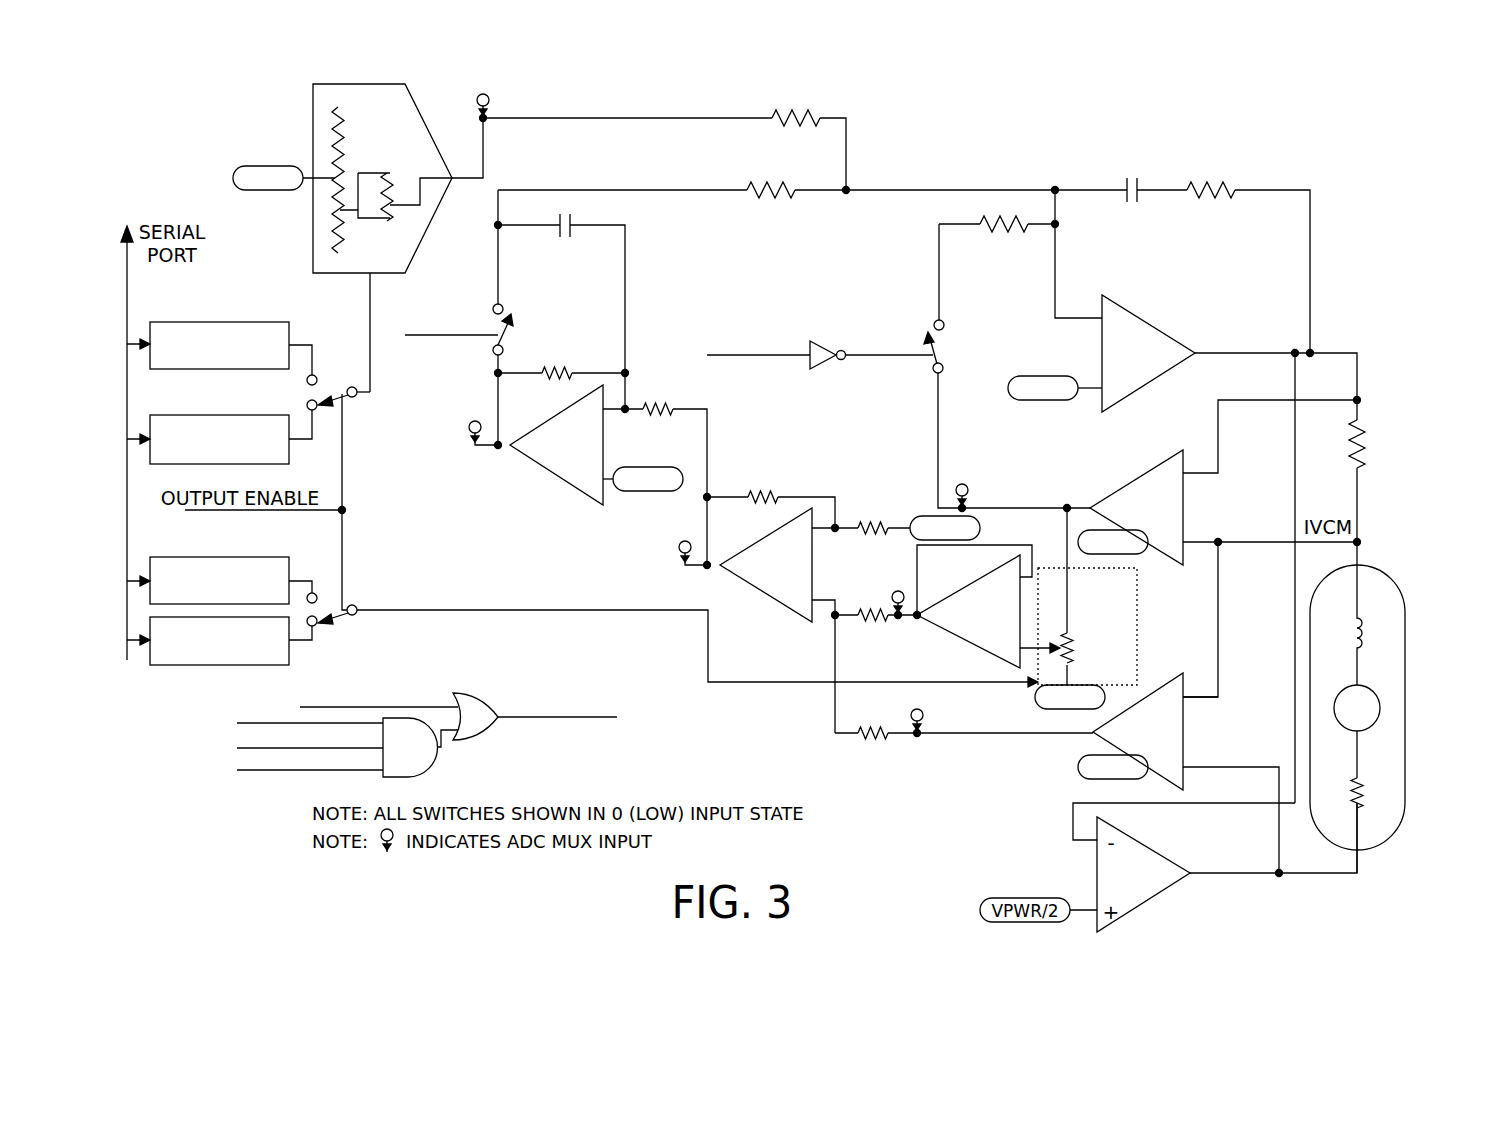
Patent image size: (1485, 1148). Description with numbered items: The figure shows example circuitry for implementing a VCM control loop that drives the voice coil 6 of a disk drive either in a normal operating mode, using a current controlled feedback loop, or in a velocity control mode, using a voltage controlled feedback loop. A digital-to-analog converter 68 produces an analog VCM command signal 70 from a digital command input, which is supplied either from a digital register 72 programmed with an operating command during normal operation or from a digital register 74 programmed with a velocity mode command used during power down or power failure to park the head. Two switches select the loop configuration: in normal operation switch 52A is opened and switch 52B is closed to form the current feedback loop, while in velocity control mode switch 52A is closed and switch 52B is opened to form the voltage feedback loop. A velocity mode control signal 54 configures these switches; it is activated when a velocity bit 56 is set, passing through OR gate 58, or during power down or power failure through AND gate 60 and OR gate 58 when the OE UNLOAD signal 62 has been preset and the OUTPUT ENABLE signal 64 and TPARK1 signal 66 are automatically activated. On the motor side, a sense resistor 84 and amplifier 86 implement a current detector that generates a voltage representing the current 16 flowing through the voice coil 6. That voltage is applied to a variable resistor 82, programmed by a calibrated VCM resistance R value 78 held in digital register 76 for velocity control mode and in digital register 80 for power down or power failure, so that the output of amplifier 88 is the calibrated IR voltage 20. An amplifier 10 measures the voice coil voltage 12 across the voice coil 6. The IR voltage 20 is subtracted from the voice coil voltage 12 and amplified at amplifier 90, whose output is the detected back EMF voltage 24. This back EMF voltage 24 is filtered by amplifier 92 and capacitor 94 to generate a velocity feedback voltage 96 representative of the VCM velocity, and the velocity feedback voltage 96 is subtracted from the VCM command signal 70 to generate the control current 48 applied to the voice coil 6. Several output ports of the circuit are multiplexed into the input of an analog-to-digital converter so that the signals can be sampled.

The voice coil 6 is at (1382, 565).
The amplifier 10 is at (1186, 722).
The voice coil voltage 12 is at (1006, 740).
The current 16 is at (1085, 506).
The IR voltage 20 is at (911, 620).
The back EMF voltage 24 is at (690, 568).
The control current 48 is at (1243, 356).
The switch 52A is at (520, 322).
The switch 52B is at (961, 341).
The velocity mode control signal 54 is at (549, 723).
The velocity bit 56 is at (443, 702).
The OR gate 58 is at (480, 691).
The AND gate 60 is at (433, 762).
The OE UNLOAD signal 62 is at (237, 770).
The OUTPUT ENABLE signal 64 is at (343, 463).
The TPARK1 signal 66 is at (237, 748).
The digital-to-analog converter 68 is at (313, 112).
The VCM command signal 70 is at (370, 300).
The digital register 72 is at (262, 322).
The digital register 74 is at (262, 415).
The digital register 76 is at (248, 557).
The calibrated VCM resistance R value 78 is at (534, 616).
The digital register 80 is at (238, 665).
The variable resistor 82 is at (1138, 600).
The sense resistor 84 is at (1370, 414).
The amplifier 86 is at (1133, 470).
The amplifier 88 is at (963, 642).
The amplifier 90 is at (769, 603).
The amplifier 92 is at (557, 483).
The capacitor 94 is at (561, 245).
The velocity feedback voltage 96 is at (683, 193).